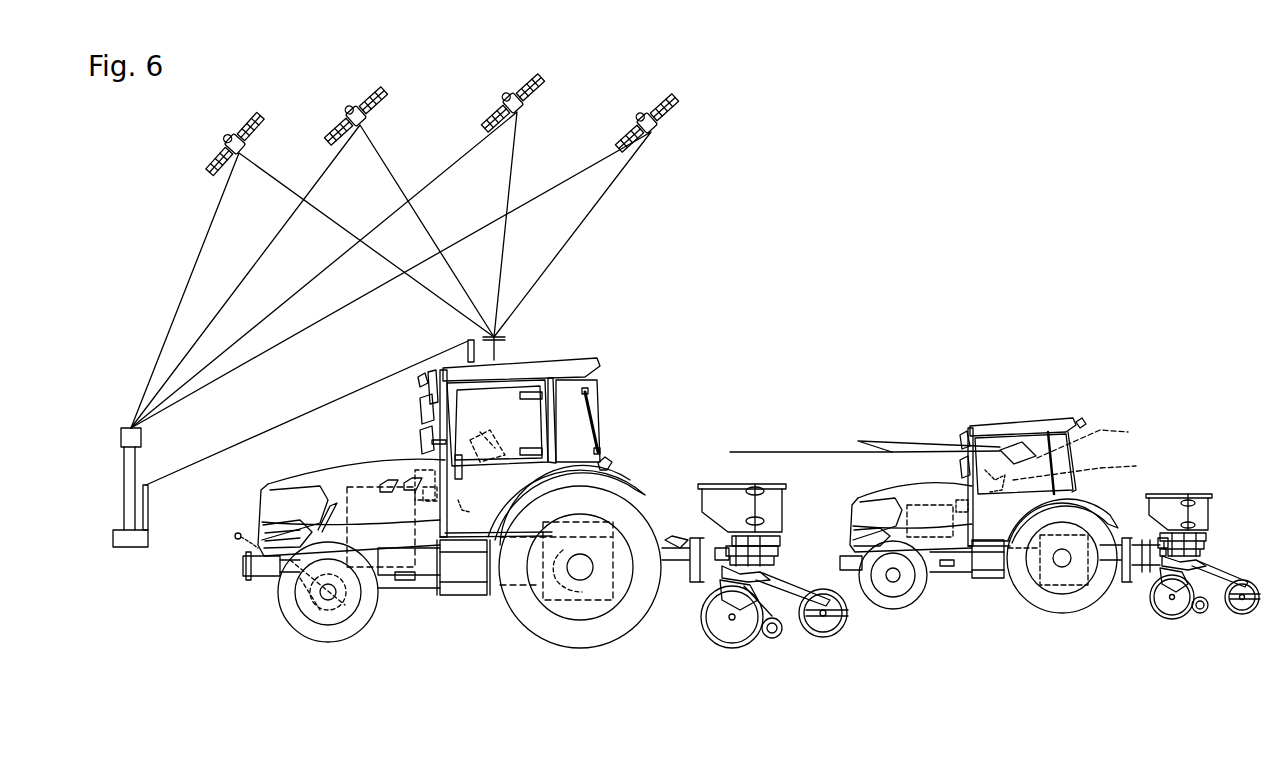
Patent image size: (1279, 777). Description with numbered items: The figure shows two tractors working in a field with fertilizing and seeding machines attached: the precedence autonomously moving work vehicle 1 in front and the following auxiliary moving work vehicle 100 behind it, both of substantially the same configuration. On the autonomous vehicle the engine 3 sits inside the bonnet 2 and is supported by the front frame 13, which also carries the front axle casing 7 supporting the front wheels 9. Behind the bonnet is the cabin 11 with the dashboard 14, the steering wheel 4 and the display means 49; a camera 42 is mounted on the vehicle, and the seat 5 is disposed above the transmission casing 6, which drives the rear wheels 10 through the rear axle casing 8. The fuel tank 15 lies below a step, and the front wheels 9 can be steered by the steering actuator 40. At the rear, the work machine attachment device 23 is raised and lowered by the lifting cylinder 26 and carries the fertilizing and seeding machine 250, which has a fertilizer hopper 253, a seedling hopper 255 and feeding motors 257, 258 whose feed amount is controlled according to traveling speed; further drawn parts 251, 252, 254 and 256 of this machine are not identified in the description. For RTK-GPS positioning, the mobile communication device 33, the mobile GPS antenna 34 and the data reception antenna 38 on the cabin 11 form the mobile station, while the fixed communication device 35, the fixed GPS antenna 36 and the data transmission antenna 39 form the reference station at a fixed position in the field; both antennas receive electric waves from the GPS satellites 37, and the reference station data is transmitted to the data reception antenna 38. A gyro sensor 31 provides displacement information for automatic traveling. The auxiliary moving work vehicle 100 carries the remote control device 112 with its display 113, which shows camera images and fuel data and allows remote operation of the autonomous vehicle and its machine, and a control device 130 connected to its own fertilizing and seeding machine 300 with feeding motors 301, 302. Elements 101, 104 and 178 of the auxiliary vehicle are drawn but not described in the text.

The autonomously moving work vehicle 1 is at (617, 300).
The bonnet 2 is at (332, 462).
The engine 3 is at (360, 450).
The steering wheel 4 is at (500, 450).
The seat 5 is at (572, 455).
The transmission casing 6 is at (600, 510).
The front axle casing 7 is at (278, 628).
The rear axle casing 8 is at (585, 596).
The front wheels 9 is at (300, 642).
The rear wheels 10 is at (648, 620).
The cabin 11 is at (598, 426).
The front frame 13 is at (273, 578).
The dashboard 14 is at (486, 482).
The fuel tank 15 is at (434, 596).
The work machine attachment device 23 is at (672, 520).
The lifting cylinder 26 is at (628, 470).
The gyro sensor 31 is at (425, 470).
The mobile communication device 33 is at (420, 470).
The mobile GPS antenna 34 is at (496, 339).
The fixed communication device 35 is at (150, 542).
The fixed GPS antenna 36 is at (122, 430).
The GPS satellites 37 is at (228, 142).
The data reception antenna 38 is at (468, 342).
The data transmission antenna 39 is at (148, 500).
The steering actuator 40 is at (239, 539).
The camera 42 is at (425, 370).
The display means 49 is at (478, 446).
The auxiliary moving work vehicle 100 is at (960, 312).
The rear wheel of second tractor 101 is at (1068, 418).
The controller 104 is at (1076, 473).
The remote control device 112 is at (1040, 428).
The display 113 is at (1005, 445).
The control device 130 is at (958, 498).
The communication unit 178 is at (1098, 438).
The fertilizing and seeding machine 250 is at (764, 447).
The press wheel 251 is at (730, 632).
The gauge wheel 252 is at (838, 635).
The fertilizer hopper 253 is at (720, 492).
The seed sensor 254 is at (736, 530).
The seedling hopper 255 is at (775, 505).
The drive unit 256 is at (778, 548).
The feeding motor 257 is at (780, 572).
The feeding motor 258 is at (780, 550).
The fertilizing and seeding machine 300 is at (1218, 480).
The feeding motor 301 is at (1205, 550).
The feeding motor 302 is at (1204, 537).